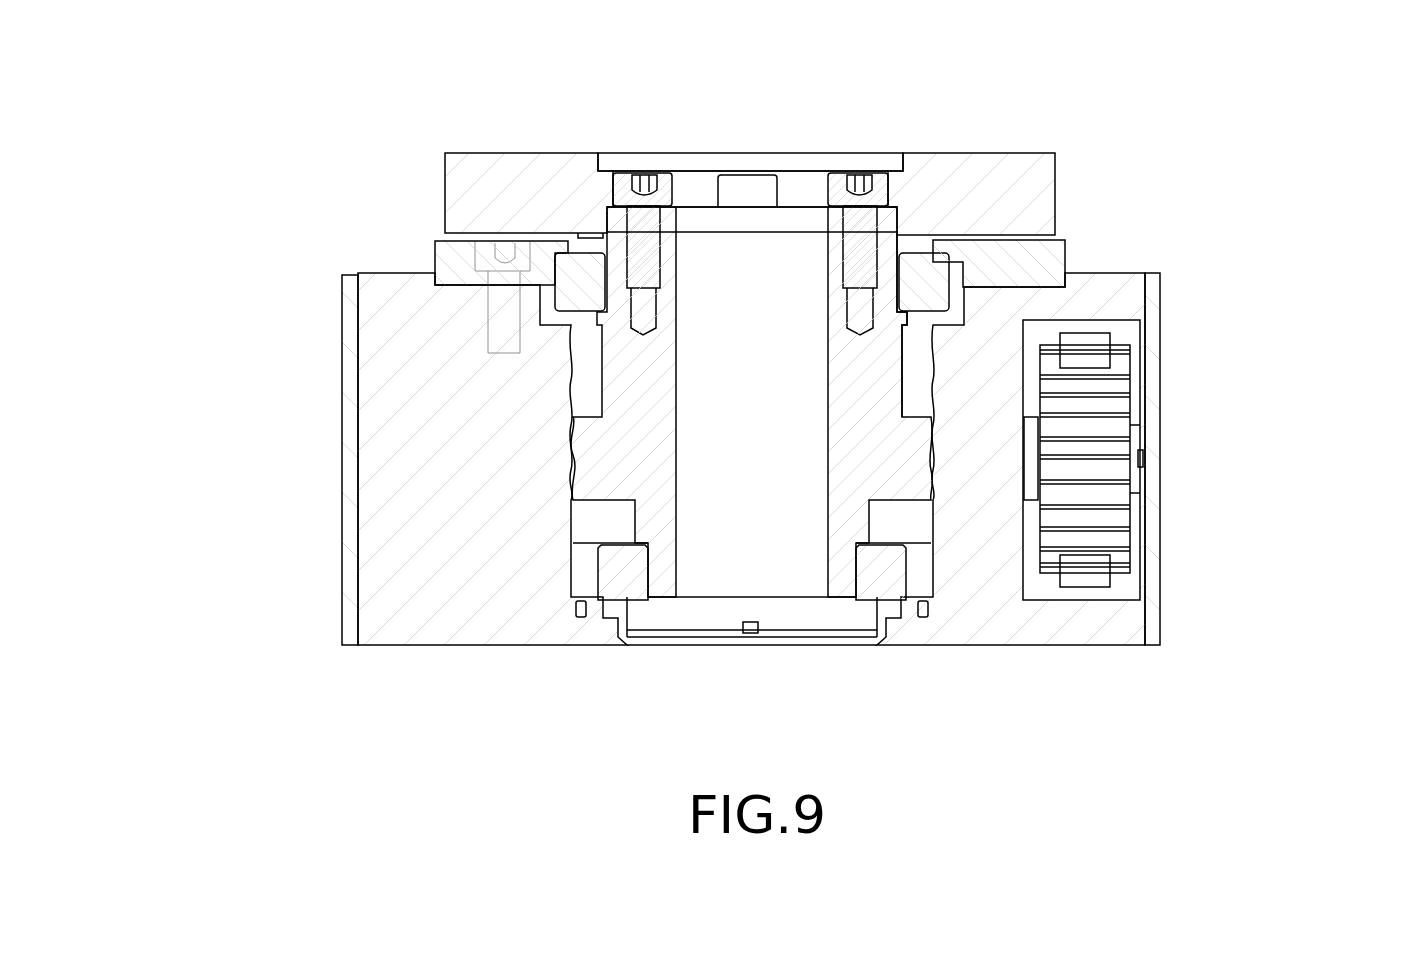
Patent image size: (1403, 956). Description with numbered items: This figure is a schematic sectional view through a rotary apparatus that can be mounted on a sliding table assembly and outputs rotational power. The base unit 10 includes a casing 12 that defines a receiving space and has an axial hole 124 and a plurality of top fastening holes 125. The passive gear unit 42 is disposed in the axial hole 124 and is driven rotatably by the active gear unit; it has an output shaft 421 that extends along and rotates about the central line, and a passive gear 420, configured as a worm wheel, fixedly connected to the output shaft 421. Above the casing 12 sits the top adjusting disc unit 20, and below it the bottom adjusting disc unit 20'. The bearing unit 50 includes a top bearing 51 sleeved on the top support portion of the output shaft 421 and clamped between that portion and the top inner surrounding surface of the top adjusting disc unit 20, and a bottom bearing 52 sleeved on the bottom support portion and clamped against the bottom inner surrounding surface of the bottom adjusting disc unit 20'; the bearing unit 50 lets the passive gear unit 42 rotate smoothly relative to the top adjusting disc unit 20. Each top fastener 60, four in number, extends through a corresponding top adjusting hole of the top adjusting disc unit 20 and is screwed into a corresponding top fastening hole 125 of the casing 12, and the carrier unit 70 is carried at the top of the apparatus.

The base unit 10 is at (650, 459).
The casing 12 is at (342, 452).
The top adjusting disc unit 20 is at (1047, 204).
The bottom adjusting disc unit 20' is at (794, 684).
The passive gear unit 42 is at (966, 398).
The passive gear 420 is at (904, 398).
The output shaft 421 is at (888, 362).
The bearing unit 50 is at (741, 171).
The top bearing 51 is at (583, 271).
The bottom bearing 52 is at (636, 580).
The top fastener 60 is at (472, 260).
The carrier unit 70 is at (982, 148).
The axial hole 124 is at (935, 520).
The top fastening hole 125 is at (487, 313).